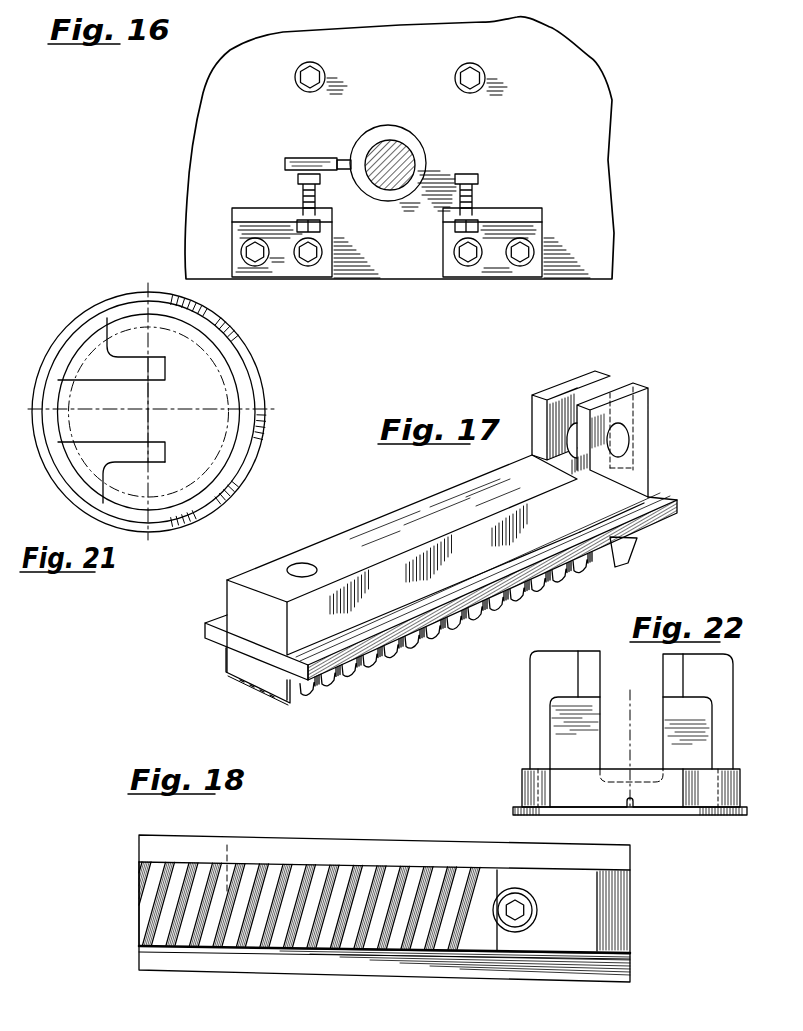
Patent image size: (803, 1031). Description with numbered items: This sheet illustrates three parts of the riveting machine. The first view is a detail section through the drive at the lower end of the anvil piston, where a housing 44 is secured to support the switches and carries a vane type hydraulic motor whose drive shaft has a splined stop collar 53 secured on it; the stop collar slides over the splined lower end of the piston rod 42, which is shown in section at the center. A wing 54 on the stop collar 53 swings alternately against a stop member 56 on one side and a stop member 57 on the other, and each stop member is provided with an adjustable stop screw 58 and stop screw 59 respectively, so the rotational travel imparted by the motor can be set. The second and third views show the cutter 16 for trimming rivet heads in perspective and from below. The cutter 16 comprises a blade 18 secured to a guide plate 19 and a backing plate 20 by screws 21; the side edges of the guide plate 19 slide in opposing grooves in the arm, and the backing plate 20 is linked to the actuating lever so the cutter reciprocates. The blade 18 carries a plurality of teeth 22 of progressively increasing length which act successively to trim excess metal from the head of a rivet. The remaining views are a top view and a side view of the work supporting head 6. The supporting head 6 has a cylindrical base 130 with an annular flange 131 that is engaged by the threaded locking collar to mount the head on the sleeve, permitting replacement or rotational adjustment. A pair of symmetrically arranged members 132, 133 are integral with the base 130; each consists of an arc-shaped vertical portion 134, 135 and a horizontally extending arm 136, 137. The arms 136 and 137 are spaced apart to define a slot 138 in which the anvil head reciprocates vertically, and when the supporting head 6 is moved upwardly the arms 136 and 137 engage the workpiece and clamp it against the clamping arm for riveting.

In FIG. 16, the housing 44 is at (200, 108).
In FIG. 16, the piston rod 42 is at (410, 147).
In FIG. 16, the splined stop collar 53 is at (428, 150).
In FIG. 16, the wing 54 is at (318, 157).
In FIG. 16, the stop member 56 is at (243, 207).
In FIG. 16, the stop member 57 is at (532, 216).
In FIG. 16, the adjustable stop screw 58 is at (298, 181).
In FIG. 16, the adjustable stop screw 59 is at (476, 190).
In FIG. 21, the supporting head 6 is at (251, 482).
In FIG. 21, the annular flange 131 is at (250, 376).
In FIG. 22, the annular flange 131 is at (515, 810).
In FIG. 21, the cylindrical base 130 is at (238, 401).
In FIG. 22, the cylindrical base 130 is at (530, 782).
In FIG. 21, the member 133 is at (110, 357).
In FIG. 22, the member 133 is at (733, 686).
In FIG. 21, the horizontally extending arm 137 is at (158, 362).
In FIG. 22, the horizontally extending arm 137 is at (676, 688).
In FIG. 21, the member 132 is at (108, 428).
In FIG. 22, the member 132 is at (530, 686).
In FIG. 21, the horizontally extending arm 136 is at (155, 456).
In FIG. 22, the horizontally extending arm 136 is at (588, 662).
In FIG. 21, the slot 138 is at (150, 406).
In FIG. 22, the slot 138 is at (642, 690).
In FIG. 22, the arc-shaped vertical portion 134 is at (538, 726).
In FIG. 22, the arc-shaped vertical portion 135 is at (725, 749).
In FIG. 17, the cutter 16 is at (256, 565).
In FIG. 18, the cutter 16 is at (360, 823).
In FIG. 17, the backing plate 20 is at (230, 592).
In FIG. 17, the guide plate 19 is at (210, 634).
In FIG. 17, the blade 18 is at (247, 675).
In FIG. 18, the blade 18 is at (139, 878).
In FIG. 17, the teeth 22 is at (357, 678).
In FIG. 18, the teeth 22 is at (428, 873).
In FIG. 18, the screws 21 is at (228, 845).